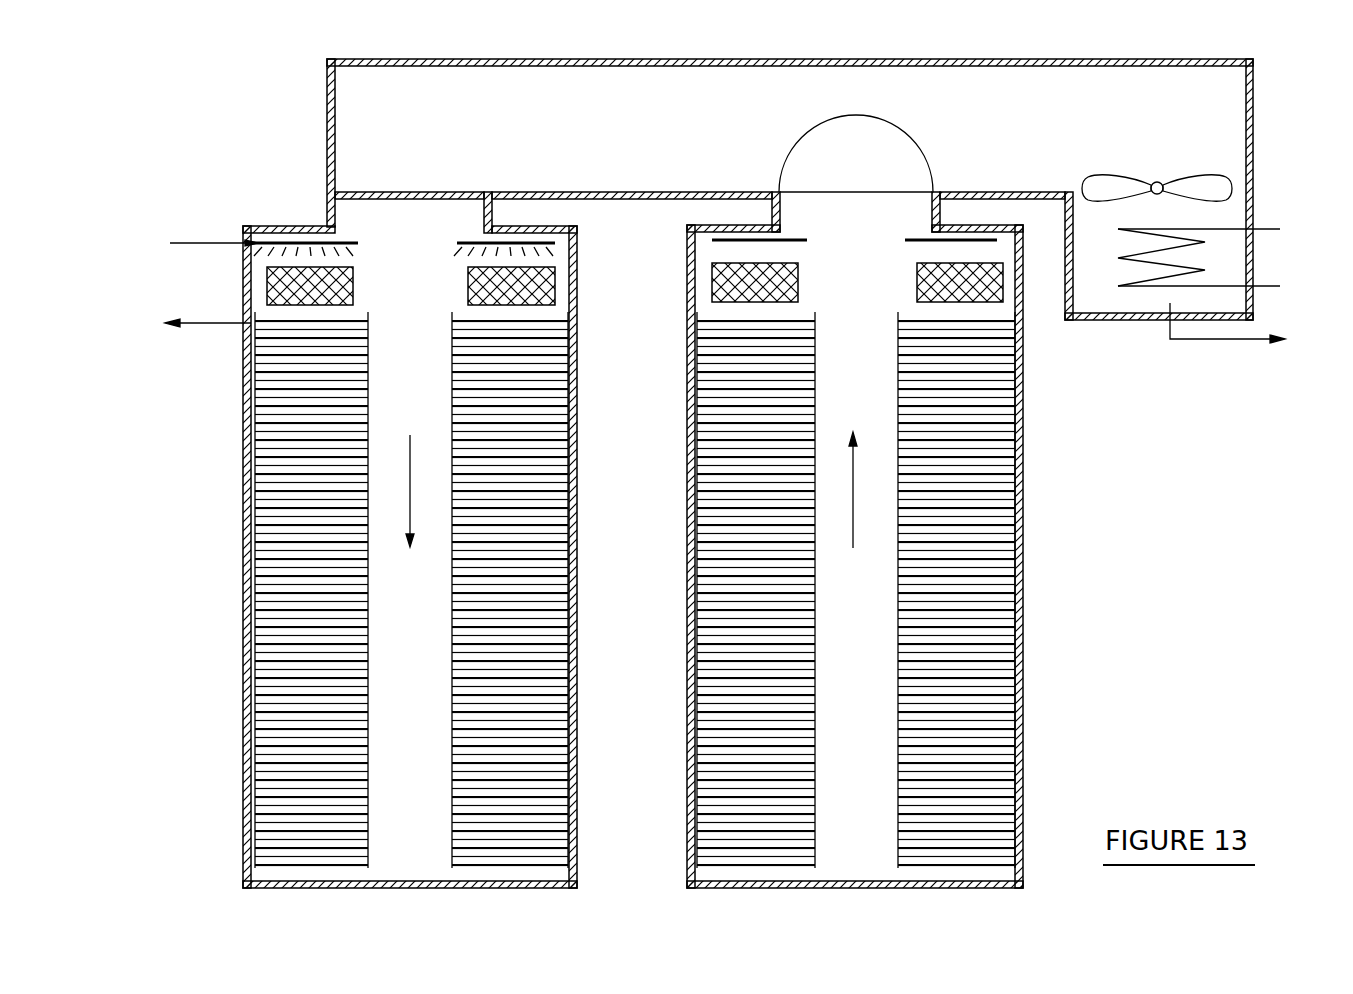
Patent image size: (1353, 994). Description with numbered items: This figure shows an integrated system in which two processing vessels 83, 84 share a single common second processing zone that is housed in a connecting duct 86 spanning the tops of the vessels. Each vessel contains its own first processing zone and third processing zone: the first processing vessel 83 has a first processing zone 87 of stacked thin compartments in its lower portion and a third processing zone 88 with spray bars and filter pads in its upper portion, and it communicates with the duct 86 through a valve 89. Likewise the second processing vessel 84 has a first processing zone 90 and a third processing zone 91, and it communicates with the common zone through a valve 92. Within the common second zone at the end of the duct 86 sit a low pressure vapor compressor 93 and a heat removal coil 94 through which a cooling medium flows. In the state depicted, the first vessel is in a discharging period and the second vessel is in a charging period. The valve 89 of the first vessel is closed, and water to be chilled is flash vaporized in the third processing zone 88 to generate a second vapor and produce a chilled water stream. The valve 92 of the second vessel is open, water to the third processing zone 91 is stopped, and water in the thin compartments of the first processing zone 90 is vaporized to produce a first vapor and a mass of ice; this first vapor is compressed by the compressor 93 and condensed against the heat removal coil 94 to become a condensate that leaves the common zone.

The first processing vessel 83 is at (237, 548).
The second processing vessel 84 is at (1023, 533).
The recirculation duct 86 is at (743, 71).
The first processing zone 87 is at (411, 590).
The third processing zone 88 is at (362, 274).
The valve 89 is at (372, 187).
The first processing zone 90 is at (856, 590).
The third processing zone 91 is at (857, 275).
The valve 92 is at (900, 180).
The low pressure vapor compressor 93 is at (1105, 172).
The heat removal coil 94 is at (1135, 260).